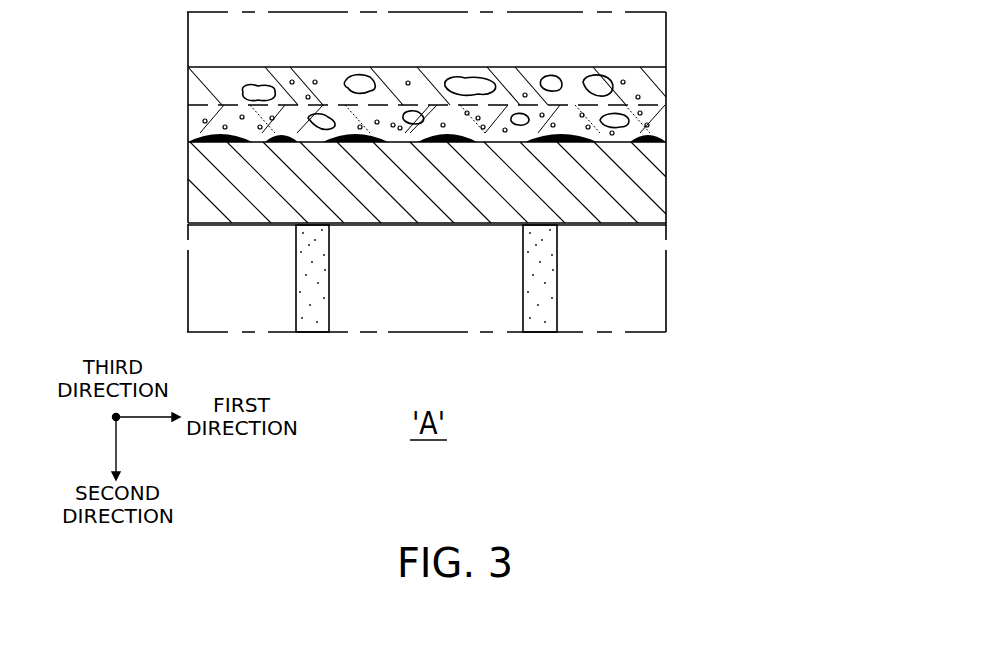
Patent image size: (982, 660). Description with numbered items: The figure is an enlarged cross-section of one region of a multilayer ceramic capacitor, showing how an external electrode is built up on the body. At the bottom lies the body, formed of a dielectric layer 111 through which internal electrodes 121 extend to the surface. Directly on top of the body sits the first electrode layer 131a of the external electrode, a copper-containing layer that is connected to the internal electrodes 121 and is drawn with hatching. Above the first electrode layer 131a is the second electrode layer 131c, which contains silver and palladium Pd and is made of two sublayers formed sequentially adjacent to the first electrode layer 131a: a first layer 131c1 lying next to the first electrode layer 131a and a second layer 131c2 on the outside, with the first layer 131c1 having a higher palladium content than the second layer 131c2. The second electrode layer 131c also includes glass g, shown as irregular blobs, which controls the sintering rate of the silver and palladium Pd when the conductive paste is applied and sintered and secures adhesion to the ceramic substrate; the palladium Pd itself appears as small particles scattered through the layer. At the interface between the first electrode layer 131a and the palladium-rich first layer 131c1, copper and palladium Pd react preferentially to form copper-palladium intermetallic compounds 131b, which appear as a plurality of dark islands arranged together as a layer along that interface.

The dielectric layer 111 is at (418, 333).
The internal electrode 121 is at (312, 333).
The first electrode layer 131a is at (653, 187).
The copper-palladium intermetallic compound 131b is at (653, 129).
The second electrode layer 131c is at (509, 96).
The first layer 131c1 is at (652, 118).
The second layer 131c2 is at (652, 85).
The glass g is at (243, 92).
The palladium Pd is at (205, 121).